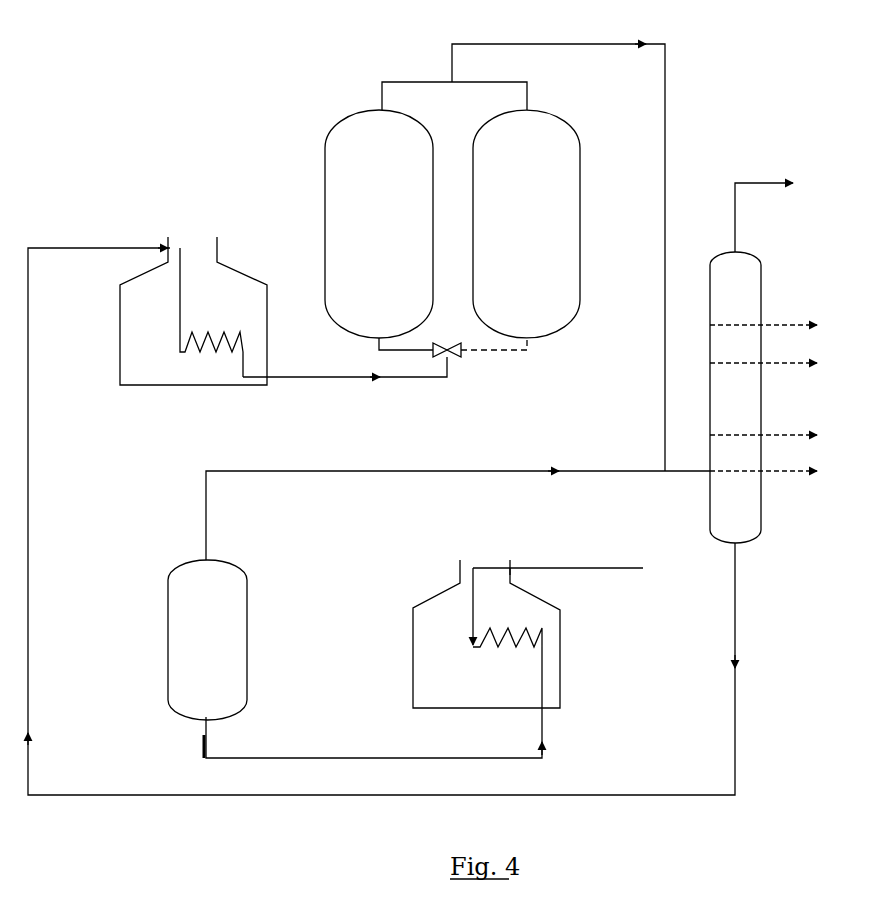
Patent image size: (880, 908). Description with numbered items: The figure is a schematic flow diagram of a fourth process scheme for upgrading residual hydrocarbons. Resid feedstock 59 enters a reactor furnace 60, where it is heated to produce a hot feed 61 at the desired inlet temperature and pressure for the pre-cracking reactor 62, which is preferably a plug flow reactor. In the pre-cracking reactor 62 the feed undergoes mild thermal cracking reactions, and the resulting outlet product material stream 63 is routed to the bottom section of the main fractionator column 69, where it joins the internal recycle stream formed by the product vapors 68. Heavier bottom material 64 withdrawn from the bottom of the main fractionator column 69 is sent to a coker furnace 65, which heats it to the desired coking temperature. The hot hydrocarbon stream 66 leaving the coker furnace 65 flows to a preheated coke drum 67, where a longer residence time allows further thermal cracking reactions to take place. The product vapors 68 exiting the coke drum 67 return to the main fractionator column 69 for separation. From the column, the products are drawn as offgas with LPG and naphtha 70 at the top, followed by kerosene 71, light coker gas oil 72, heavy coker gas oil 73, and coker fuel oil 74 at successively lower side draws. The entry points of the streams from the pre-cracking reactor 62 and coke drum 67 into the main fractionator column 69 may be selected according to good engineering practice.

The resid feedstock 59 is at (527, 568).
The reactor furnace 60 is at (560, 632).
The hot feed 61 is at (385, 758).
The pre-cracking reactor 62 is at (168, 580).
The outlet product material stream 63 is at (230, 471).
The heavier bottom material 64 is at (735, 632).
The coker furnace 65 is at (235, 262).
The hot hydrocarbon stream 66 is at (300, 377).
The coke drum 67 is at (473, 222).
The product vapors 68 is at (572, 44).
The main fractionator column 69 is at (761, 287).
The offgas with LPG and naphtha 70 is at (783, 214).
The kerosene 71 is at (777, 325).
The light coker gas oil 72 is at (777, 363).
The heavy coker gas oil 73 is at (777, 435).
The coker fuel oil 74 is at (777, 471).